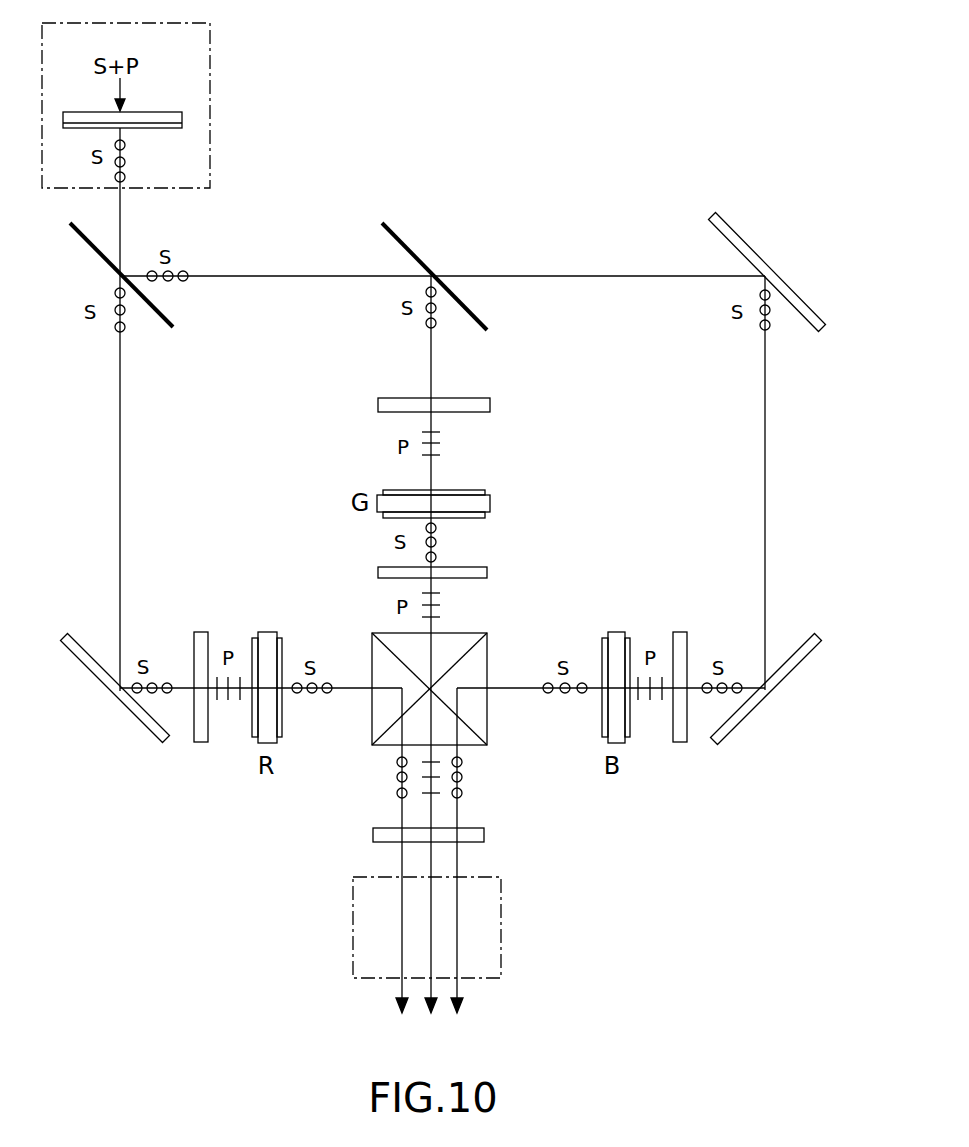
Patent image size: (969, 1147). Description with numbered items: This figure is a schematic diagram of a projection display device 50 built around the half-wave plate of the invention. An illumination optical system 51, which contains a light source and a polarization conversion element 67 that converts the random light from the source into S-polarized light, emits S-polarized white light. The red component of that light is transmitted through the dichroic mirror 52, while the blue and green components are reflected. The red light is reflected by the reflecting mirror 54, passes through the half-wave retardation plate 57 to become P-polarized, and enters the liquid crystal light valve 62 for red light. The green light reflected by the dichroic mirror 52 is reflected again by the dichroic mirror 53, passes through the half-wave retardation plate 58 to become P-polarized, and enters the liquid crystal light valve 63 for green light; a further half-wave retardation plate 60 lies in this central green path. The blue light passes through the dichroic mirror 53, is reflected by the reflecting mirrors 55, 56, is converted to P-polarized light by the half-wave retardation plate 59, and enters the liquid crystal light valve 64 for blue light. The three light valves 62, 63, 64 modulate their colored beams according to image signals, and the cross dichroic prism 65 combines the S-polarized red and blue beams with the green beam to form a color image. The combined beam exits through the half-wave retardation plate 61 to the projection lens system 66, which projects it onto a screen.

The projection display device 50 is at (538, 208).
The illumination optical system 51 is at (210, 176).
The dichroic mirror 52 is at (90, 249).
The dichroic mirror 53 is at (410, 248).
The reflecting mirror 54 is at (90, 673).
The reflecting mirror 55 is at (738, 238).
The reflecting mirror 56 is at (788, 675).
The λ/2 retardation plate 57 is at (203, 632).
The λ/2 retardation plate 58 is at (490, 405).
The λ/2 retardation plate 59 is at (682, 632).
The λ/2 retardation plate 60 is at (487, 572).
The λ/2 retardation plate 61 is at (484, 835).
The liquid crystal light valve 62 is at (270, 632).
The liquid crystal light valve 63 is at (490, 505).
The liquid crystal light valve 64 is at (618, 632).
The cross dichroic prism 65 is at (487, 648).
The projection lens system 66 is at (501, 910).
The polarization conversion element 67 is at (182, 122).